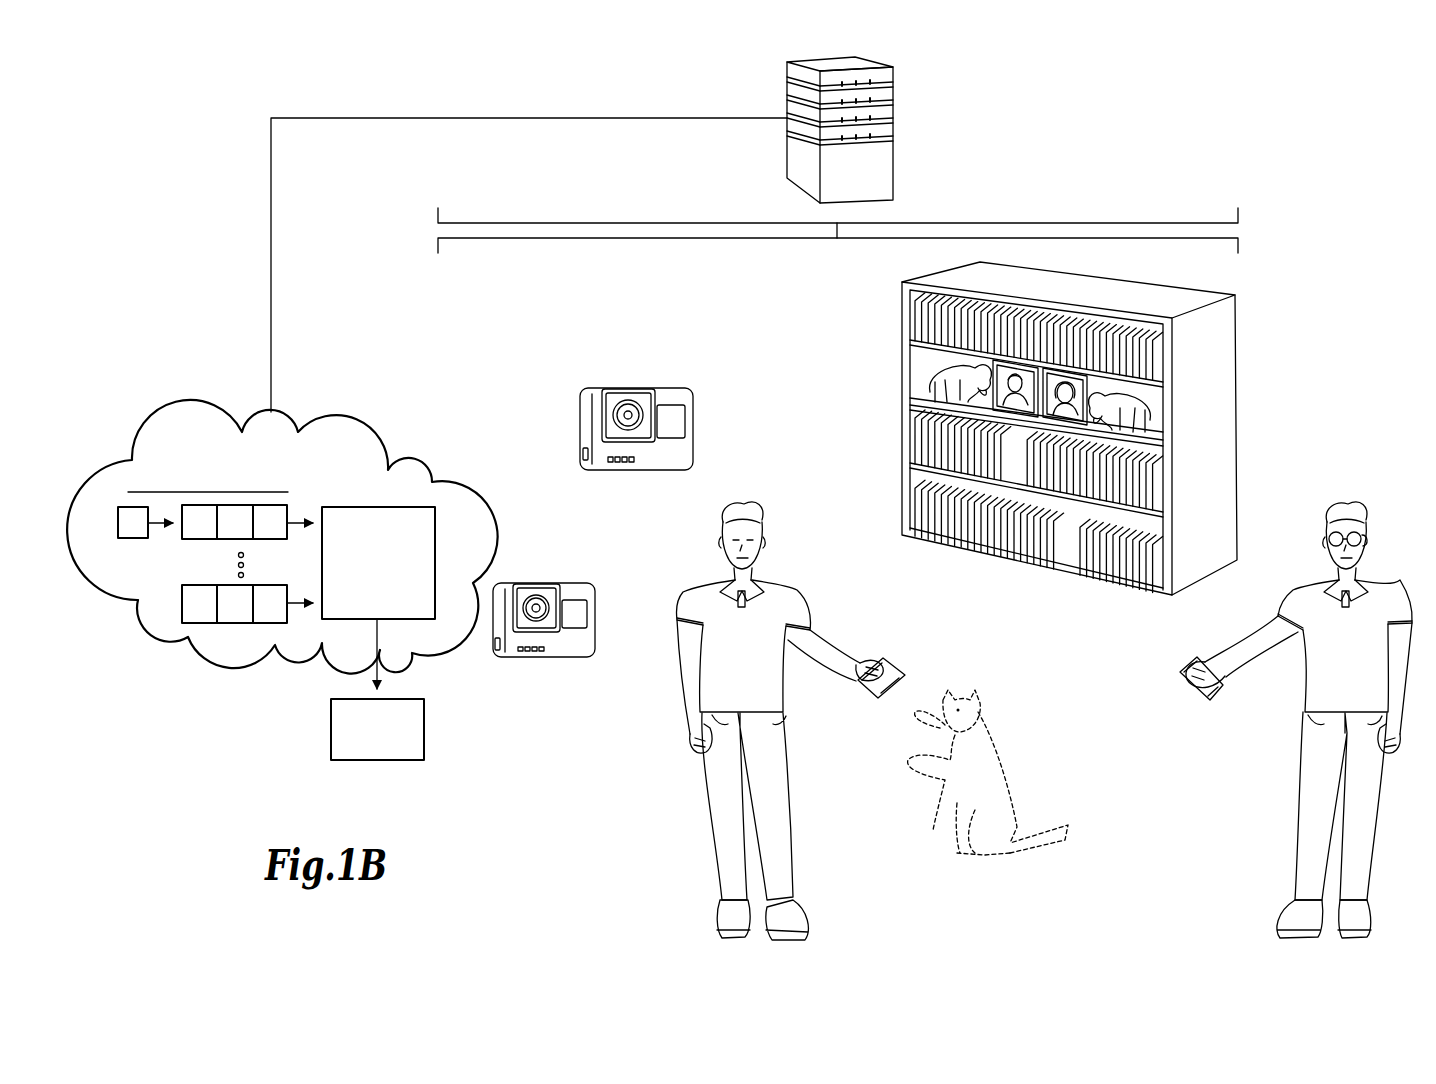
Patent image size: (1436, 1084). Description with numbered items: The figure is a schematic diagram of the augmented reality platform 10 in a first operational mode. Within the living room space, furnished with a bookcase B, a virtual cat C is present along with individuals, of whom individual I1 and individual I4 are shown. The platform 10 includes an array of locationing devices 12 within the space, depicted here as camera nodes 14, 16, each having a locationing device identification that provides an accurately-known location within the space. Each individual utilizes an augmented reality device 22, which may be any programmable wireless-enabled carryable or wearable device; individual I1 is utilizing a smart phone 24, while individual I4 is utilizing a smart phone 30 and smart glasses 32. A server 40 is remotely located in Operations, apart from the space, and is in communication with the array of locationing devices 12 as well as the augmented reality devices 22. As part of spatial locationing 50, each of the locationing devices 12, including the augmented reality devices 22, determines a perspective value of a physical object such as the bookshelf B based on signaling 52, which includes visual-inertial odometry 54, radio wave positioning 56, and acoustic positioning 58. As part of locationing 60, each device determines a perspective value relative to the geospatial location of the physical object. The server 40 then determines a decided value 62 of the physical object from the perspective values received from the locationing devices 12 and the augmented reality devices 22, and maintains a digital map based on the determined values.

The augmented reality platform 10 is at (1282, 306).
The locationing devices 12 is at (598, 512).
The camera node 14 is at (573, 587).
The camera node 16 is at (680, 393).
The augmented reality device 22 is at (903, 703).
The smart phone 24 is at (895, 660).
The smart phone 30 is at (1184, 660).
The smart glasses 32 is at (1367, 540).
The server 40 is at (893, 128).
The spatial locationing 50 is at (188, 398).
The signaling 52 is at (123, 506).
The visual-inertial odometry 54 is at (196, 541).
The radio wave positioning 56 is at (231, 541).
The acoustic positioning 58 is at (267, 541).
The locationing 60 is at (366, 577).
The decided value 62 is at (424, 728).
The bookcase B is at (1228, 417).
The virtual cat C is at (988, 773).
The individual I1 is at (715, 805).
The individual I4 is at (1310, 720).